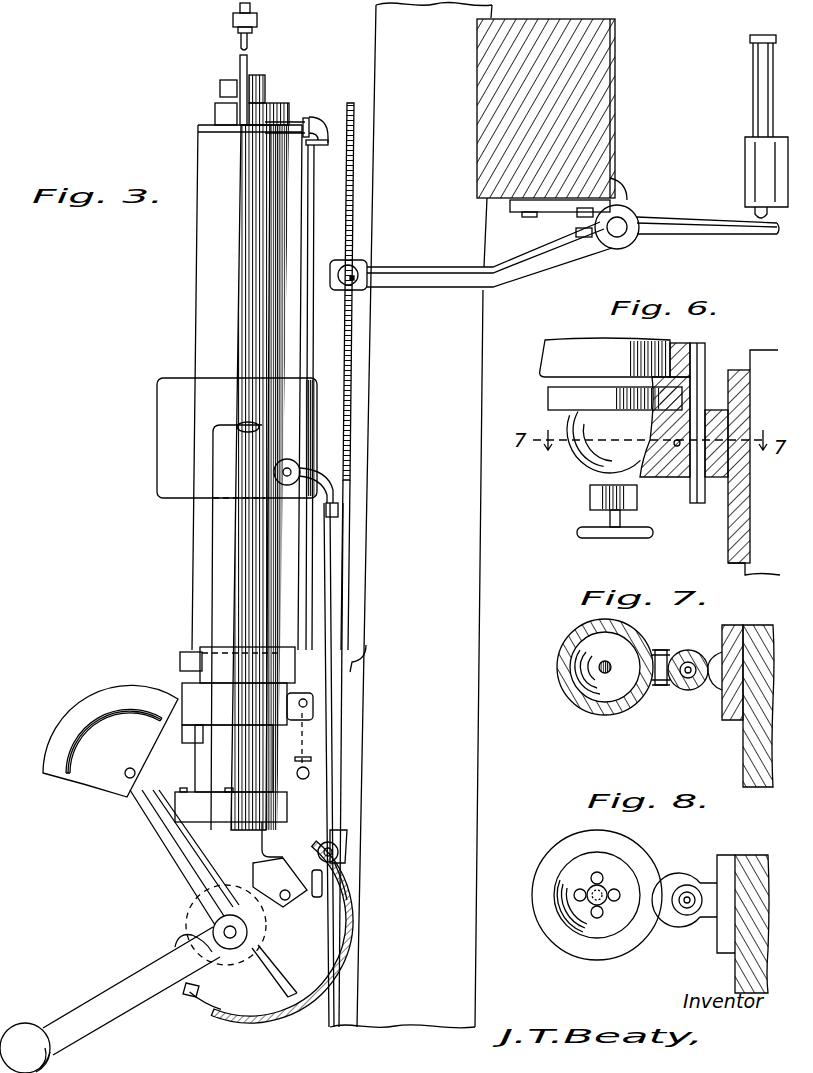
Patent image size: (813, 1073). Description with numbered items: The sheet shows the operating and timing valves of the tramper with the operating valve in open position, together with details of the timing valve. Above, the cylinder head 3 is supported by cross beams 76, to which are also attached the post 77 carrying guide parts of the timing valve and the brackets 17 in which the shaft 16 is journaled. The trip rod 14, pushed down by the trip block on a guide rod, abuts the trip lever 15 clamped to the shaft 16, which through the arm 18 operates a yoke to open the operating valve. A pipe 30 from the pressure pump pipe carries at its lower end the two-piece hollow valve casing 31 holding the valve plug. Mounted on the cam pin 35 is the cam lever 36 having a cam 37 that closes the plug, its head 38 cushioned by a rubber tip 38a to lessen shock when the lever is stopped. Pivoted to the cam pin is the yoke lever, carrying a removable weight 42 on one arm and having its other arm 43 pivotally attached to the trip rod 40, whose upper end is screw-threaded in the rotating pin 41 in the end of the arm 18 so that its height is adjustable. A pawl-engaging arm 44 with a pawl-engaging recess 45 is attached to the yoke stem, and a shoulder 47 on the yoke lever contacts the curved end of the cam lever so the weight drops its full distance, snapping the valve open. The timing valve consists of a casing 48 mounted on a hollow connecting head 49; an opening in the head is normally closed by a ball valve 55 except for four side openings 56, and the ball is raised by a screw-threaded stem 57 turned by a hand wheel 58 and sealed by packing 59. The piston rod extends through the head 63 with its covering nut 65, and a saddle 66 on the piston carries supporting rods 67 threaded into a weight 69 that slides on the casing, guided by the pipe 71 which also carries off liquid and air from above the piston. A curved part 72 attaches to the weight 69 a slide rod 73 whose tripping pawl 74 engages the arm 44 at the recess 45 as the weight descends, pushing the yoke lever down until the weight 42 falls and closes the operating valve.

In FIG. 3, the cylinder head 3 is at (748, 160).
In FIG. 3, the trip rod 14 is at (760, 100).
In FIG. 3, the trip lever 15 is at (722, 232).
In FIG. 3, the shaft 16 is at (620, 225).
In FIG. 3, the brackets 17 is at (556, 212).
In FIG. 3, the arm 18 is at (430, 267).
In FIG. 3, the pipe 30 is at (218, 527).
In FIG. 3, the valve casing 31 is at (231, 752).
In FIG. 3, the cam pin 35 is at (222, 930).
In FIG. 3, the cam lever 36 is at (107, 990).
In FIG. 3, the cam 37 is at (187, 898).
In FIG. 3, the head 38 is at (340, 842).
In FIG. 3, the rubber tip 38a is at (283, 863).
In FIG. 3, the trip rod 40 is at (350, 565).
In FIG. 3, the rotating pin 41 is at (355, 280).
In FIG. 3, the removable weight 42 is at (112, 695).
In FIG. 3, the arm 43 is at (350, 902).
In FIG. 3, the pawl-engaging arm 44 is at (285, 928).
In FIG. 3, the pawl-engaging recess 45 is at (320, 895).
In FIG. 3, the shoulder 47 is at (305, 962).
In FIG. 3, the casing 48 is at (195, 247).
In FIG. 6, the hollow connecting head 49 is at (583, 453).
In FIG. 7, the hollow connecting head 49 is at (567, 645).
In FIG. 8, the hollow connecting head 49 is at (552, 858).
In FIG. 8, the ball valve 55 is at (583, 887).
In FIG. 8, the side openings 56 is at (593, 913).
In FIG. 6, the screw-threaded stem 57 is at (610, 516).
In FIG. 7, the screw-threaded stem 57 is at (598, 670).
In FIG. 6, the hand wheel 58 is at (608, 538).
In FIG. 3, the packing 59 is at (140, 825).
In FIG. 3, the head 63 is at (220, 115).
In FIG. 3, the covering nut 65 is at (265, 80).
In FIG. 3, the saddle 66 is at (258, 22).
In FIG. 3, the supporting rods 67 is at (240, 62).
In FIG. 3, the weight 69 is at (163, 412).
In FIG. 6, the weight 69 is at (578, 355).
In FIG. 3, the pipe 71 is at (290, 120).
In FIG. 6, the pipe 71 is at (705, 350).
In FIG. 7, the pipe 71 is at (690, 655).
In FIG. 8, the pipe 71 is at (690, 885).
In FIG. 3, the curved part 72 is at (330, 487).
In FIG. 3, the slide rod 73 is at (330, 612).
In FIG. 3, the tripping pawl 74 is at (317, 877).
In FIG. 3, the cross beams 76 is at (598, 135).
In FIG. 3, the post 77 is at (411, 515).